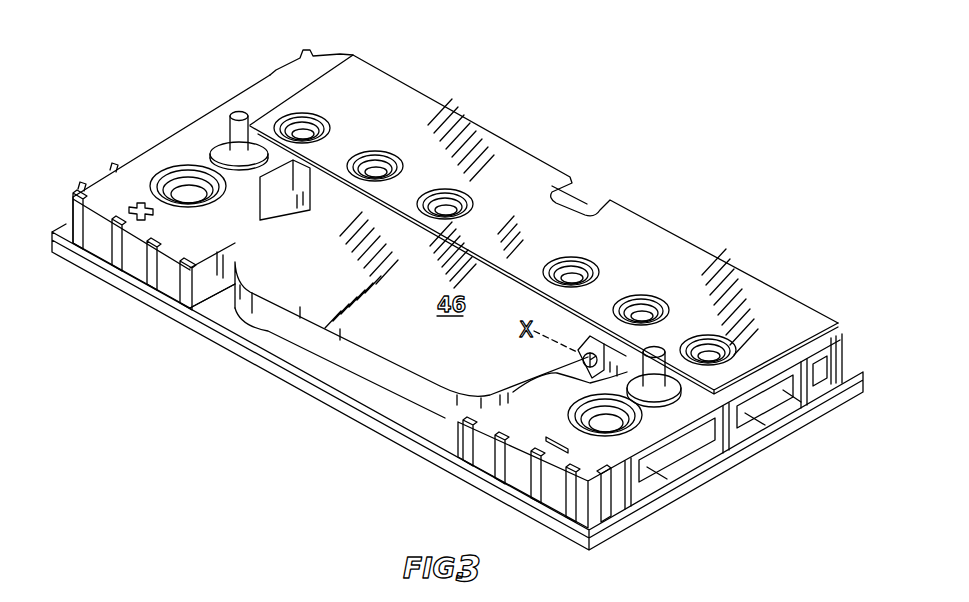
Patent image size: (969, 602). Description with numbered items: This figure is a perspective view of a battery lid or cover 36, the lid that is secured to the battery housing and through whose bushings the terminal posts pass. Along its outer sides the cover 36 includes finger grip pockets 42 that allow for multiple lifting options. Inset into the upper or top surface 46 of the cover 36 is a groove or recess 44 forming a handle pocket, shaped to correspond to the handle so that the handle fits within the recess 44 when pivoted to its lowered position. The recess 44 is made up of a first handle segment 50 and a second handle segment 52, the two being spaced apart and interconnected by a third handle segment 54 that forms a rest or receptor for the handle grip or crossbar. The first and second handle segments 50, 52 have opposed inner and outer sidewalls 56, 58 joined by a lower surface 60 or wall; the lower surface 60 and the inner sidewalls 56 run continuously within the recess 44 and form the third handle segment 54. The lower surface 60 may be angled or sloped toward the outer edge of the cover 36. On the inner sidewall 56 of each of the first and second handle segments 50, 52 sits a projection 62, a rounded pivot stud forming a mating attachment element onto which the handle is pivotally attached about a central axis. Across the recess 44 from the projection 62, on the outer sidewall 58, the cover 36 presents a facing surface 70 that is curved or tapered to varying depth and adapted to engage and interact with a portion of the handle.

The battery cover 36 is at (582, 112).
The finger grip pockets 42 is at (742, 428).
The recess 44 is at (422, 416).
The top surface 46 is at (541, 227).
The first handle segment 50 is at (648, 345).
The second handle segment 52 is at (318, 186).
The third handle segment 54 is at (268, 331).
The inner sidewalls 56 is at (560, 363).
The outer sidewalls 58 is at (256, 218).
The lower surface 60 is at (272, 222).
The projection 62 is at (622, 362).
The facing surface 70 is at (270, 222).